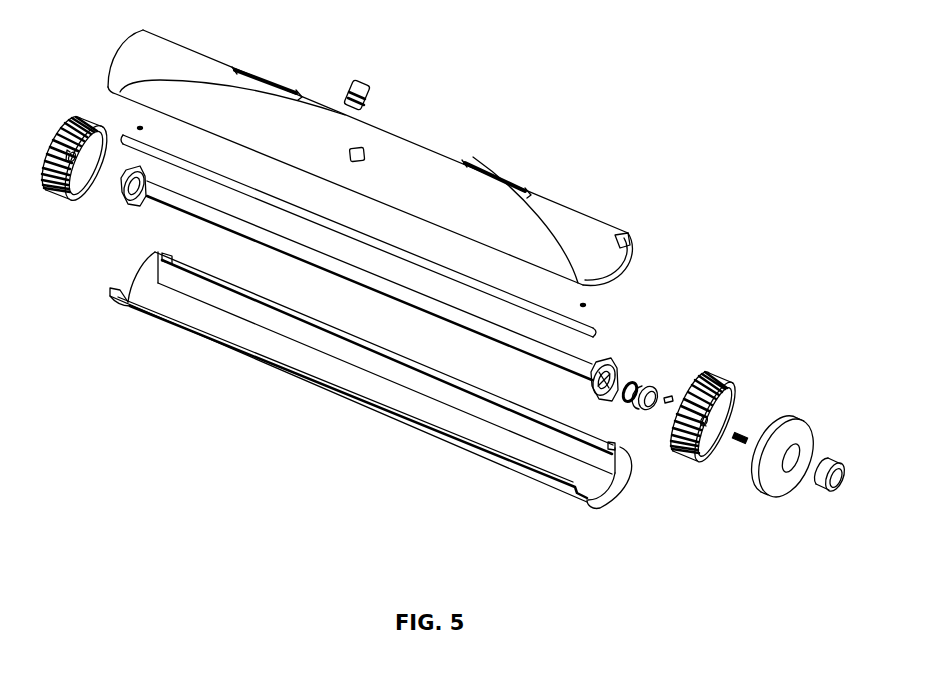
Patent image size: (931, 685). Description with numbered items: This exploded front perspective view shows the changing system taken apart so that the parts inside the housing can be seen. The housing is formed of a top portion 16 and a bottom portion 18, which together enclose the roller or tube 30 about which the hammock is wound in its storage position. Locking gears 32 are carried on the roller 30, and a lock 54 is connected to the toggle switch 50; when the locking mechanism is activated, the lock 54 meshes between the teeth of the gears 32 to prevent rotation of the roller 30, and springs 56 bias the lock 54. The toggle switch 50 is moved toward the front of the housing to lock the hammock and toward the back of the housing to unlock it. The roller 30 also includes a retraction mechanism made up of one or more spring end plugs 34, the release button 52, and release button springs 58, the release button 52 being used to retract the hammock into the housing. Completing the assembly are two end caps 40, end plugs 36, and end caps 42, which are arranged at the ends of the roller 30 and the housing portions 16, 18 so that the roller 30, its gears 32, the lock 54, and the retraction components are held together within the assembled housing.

The top portion 16 is at (420, 144).
The bottom portion 18 is at (266, 373).
The roller 30 is at (168, 210).
The locking gears 32 is at (124, 203).
The spring end plug 34 is at (636, 380).
The end plug 36 is at (660, 381).
The end cap 40 is at (63, 118).
The end cap 42 is at (798, 415).
The toggle switch 50 is at (368, 76).
The release button 52 is at (837, 455).
The lock 54 is at (600, 326).
The springs 56 is at (130, 118).
The release button springs 58 is at (735, 446).